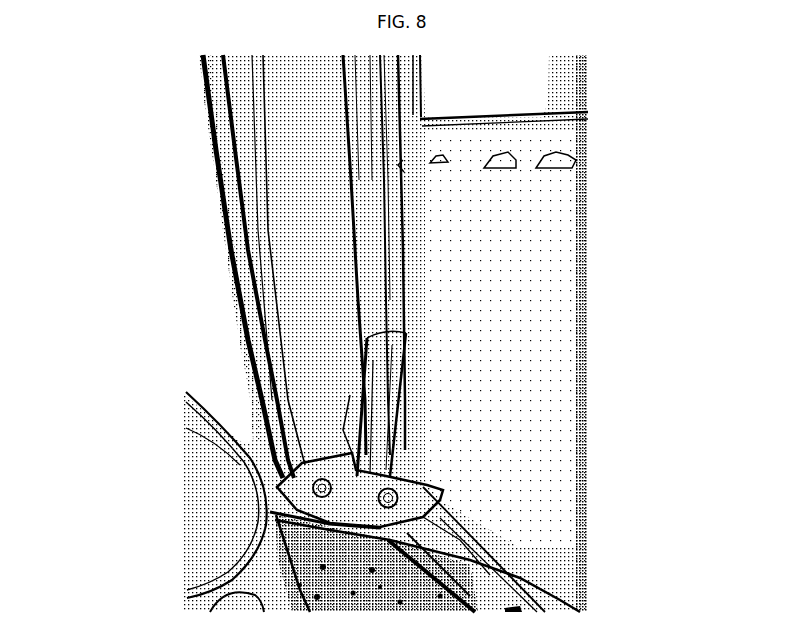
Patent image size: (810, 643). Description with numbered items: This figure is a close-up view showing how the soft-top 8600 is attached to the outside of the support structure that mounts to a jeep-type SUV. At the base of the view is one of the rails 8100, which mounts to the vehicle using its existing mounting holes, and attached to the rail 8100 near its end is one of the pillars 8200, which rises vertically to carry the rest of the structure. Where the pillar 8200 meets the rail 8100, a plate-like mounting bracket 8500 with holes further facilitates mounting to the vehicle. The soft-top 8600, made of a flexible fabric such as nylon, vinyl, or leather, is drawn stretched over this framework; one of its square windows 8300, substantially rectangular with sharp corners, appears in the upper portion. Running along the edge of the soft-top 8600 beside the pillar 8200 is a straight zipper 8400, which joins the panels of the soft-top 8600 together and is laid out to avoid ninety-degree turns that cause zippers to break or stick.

The rails 8100 is at (490, 563).
The pillars 8200 is at (408, 292).
The square windows 8300 is at (550, 83).
The straight zipper 8400 is at (232, 271).
The mounting brackets 8500 is at (427, 483).
The soft-top 8600 is at (561, 333).